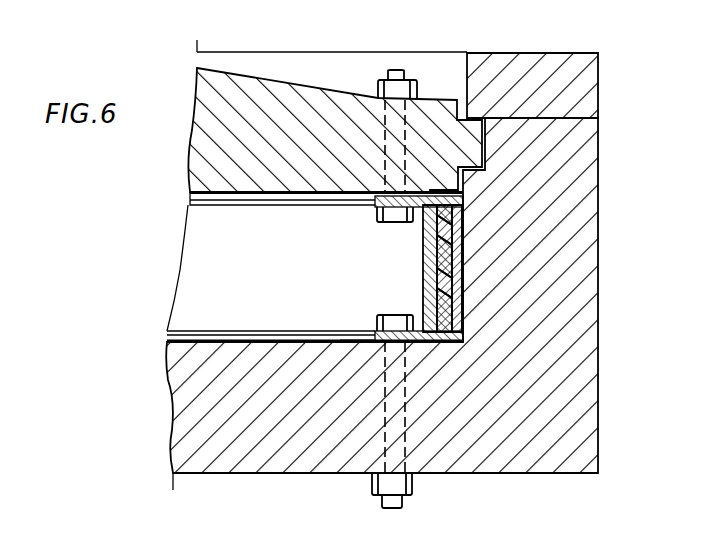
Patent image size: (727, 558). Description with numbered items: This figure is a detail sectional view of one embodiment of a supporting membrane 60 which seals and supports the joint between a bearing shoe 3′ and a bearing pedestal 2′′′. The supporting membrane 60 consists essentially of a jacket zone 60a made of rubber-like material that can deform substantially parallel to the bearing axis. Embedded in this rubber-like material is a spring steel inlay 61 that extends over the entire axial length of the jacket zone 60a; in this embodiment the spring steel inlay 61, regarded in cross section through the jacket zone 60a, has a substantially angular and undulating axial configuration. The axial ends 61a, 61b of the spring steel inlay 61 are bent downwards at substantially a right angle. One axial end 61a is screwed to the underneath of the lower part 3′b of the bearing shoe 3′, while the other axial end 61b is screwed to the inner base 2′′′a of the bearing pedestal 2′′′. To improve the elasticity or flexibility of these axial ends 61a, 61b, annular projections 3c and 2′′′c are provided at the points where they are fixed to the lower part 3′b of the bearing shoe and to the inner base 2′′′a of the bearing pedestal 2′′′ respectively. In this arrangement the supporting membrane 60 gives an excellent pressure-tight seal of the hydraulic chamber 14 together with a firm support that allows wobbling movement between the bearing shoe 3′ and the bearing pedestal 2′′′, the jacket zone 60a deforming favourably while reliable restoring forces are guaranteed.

The bearing pedestal 2′′′ is at (598, 335).
The inner base of the bearing pedestal 2′′′a is at (255, 340).
The annular projection 2′′′c is at (372, 340).
The bearing shoe 3′ is at (248, 70).
The lower part of the bearing shoe 3′b is at (305, 107).
The annular projection 3c is at (375, 205).
The hydraulic chamber 14 is at (193, 269).
The supporting membrane 60 is at (423, 252).
The jacket zone 60a is at (464, 298).
The spring steel inlay 61 is at (464, 258).
The axial end of the spring steel inlay 61a is at (428, 192).
The axial end of the spring steel inlay 61b is at (452, 342).